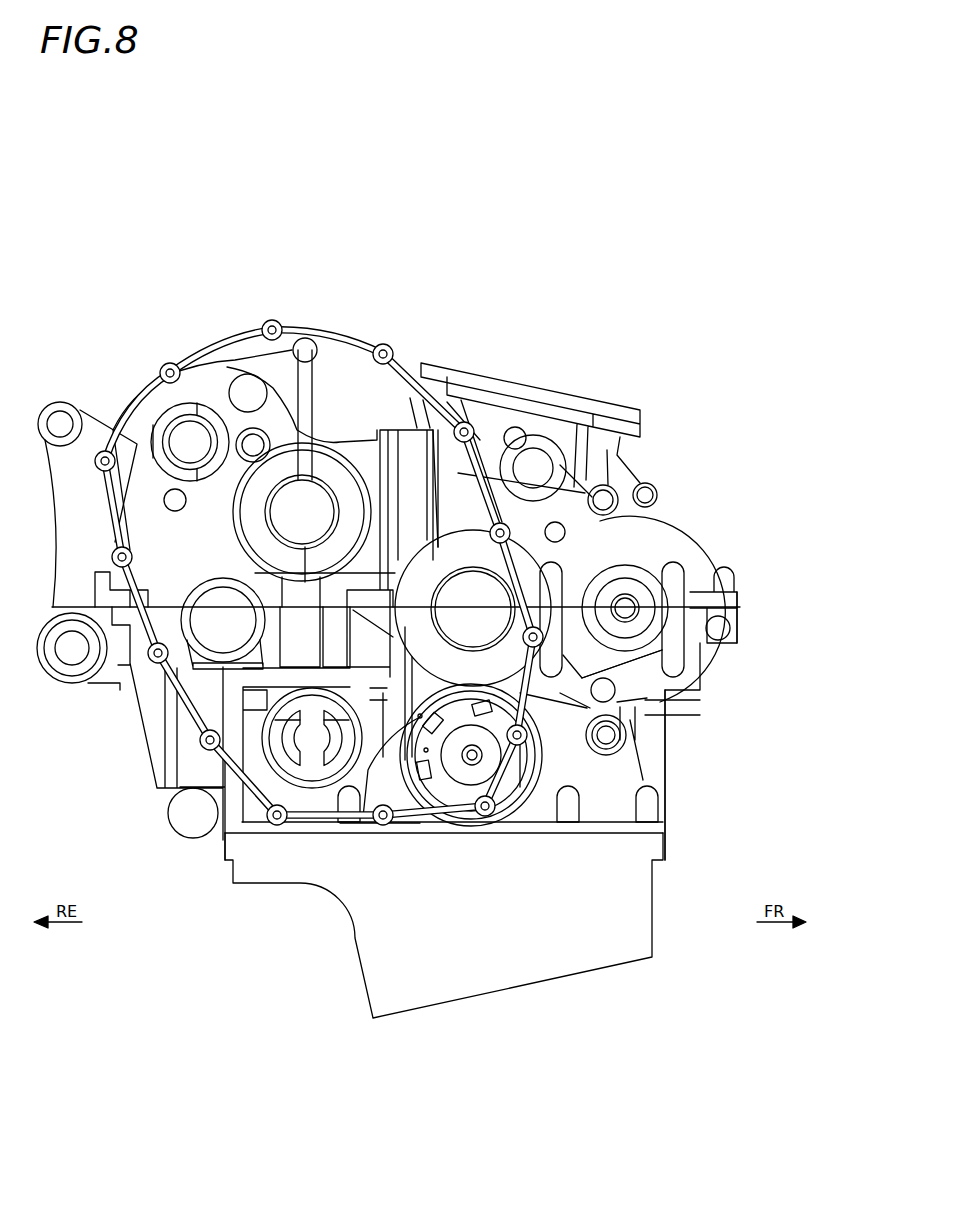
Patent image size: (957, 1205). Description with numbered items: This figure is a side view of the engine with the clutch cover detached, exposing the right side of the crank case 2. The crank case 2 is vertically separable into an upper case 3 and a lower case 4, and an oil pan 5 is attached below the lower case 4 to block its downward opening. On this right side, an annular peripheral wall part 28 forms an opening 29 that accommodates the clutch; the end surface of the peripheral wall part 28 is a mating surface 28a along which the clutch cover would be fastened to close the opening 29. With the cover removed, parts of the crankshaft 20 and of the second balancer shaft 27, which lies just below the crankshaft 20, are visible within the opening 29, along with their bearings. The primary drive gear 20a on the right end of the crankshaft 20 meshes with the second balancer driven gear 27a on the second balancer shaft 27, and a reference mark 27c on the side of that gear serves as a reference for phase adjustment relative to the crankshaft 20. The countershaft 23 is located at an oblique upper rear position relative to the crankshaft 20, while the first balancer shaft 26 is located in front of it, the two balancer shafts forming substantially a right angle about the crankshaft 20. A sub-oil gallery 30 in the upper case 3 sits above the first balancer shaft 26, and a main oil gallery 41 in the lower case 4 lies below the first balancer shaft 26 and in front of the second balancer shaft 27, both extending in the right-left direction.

The crank case 2 is at (765, 533).
The upper case 3 is at (673, 563).
The lower case 4 is at (690, 703).
The oil pan 5 is at (373, 947).
The crankshaft 20 is at (473, 607).
The primary drive gear 20a is at (442, 470).
The countershaft 23 is at (308, 507).
The first balancer shaft 26 is at (625, 607).
The second balancer shaft 27 is at (475, 760).
The second balancer driven gear 27a is at (413, 800).
The reference mark 27c is at (363, 800).
The peripheral wall part 28 is at (238, 338).
The mating surface 28a is at (298, 338).
The opening 29 is at (222, 372).
The sub-oil gallery 30 is at (607, 495).
The main oil gallery 41 is at (608, 737).